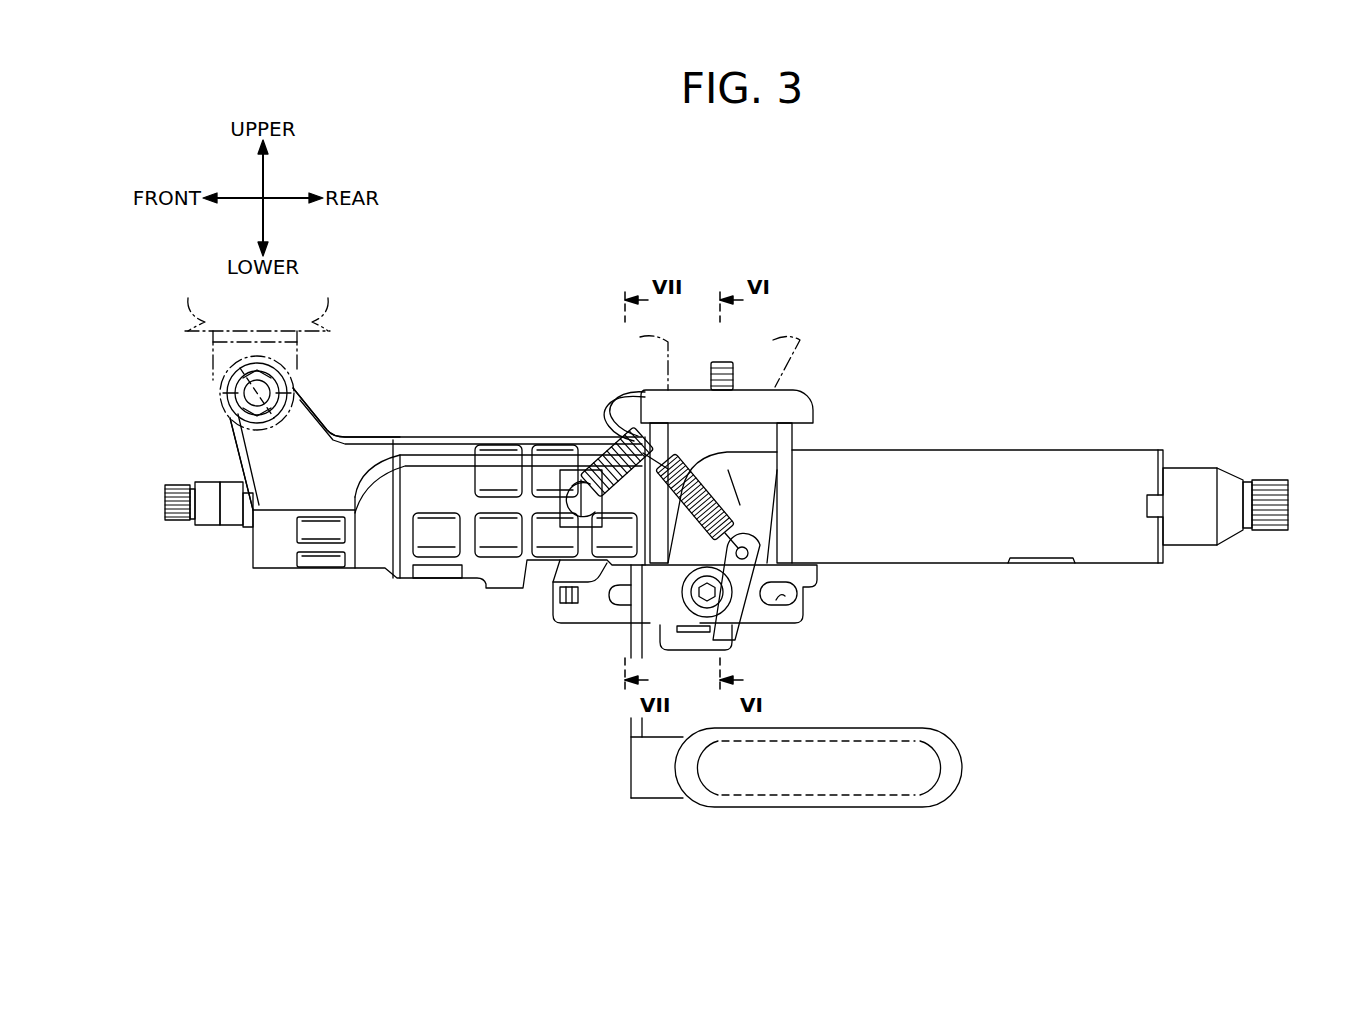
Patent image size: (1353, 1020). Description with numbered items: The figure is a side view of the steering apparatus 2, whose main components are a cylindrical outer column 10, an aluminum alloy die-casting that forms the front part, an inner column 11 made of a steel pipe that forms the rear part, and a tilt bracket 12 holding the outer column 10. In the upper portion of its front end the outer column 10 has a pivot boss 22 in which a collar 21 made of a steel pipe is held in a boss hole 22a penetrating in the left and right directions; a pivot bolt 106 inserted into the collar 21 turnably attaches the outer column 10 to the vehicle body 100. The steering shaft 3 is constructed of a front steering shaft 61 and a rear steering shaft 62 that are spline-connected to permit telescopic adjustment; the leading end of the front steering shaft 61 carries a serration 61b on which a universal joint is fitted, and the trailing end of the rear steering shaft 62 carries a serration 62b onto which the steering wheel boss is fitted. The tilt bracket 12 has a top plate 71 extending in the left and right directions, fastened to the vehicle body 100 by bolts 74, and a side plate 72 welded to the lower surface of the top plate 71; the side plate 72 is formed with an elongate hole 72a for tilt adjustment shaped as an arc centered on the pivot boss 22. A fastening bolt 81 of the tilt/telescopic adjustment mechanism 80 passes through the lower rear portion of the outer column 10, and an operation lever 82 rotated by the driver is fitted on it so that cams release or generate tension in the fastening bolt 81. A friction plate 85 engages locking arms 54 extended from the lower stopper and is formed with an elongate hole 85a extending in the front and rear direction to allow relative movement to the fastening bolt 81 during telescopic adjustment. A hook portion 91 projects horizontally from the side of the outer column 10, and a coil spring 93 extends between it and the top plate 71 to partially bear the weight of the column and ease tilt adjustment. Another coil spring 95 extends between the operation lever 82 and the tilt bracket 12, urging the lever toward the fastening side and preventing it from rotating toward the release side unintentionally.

The steering apparatus 2 is at (977, 465).
The steering shaft 3 is at (1233, 502).
The outer column 10 is at (443, 582).
The inner column 11 is at (941, 570).
The tilt bracket 12 is at (765, 443).
The collar 21 is at (226, 393).
The pivot boss 22 is at (302, 430).
The boss hole 22a is at (232, 420).
The locking arm 54 is at (568, 603).
The front steering shaft 61 is at (208, 540).
The serration 61b is at (181, 513).
The rear steering shaft 62 is at (1192, 552).
The serration 62b is at (1268, 490).
The top plate 71 is at (802, 410).
The left side plate 72 is at (755, 508).
The elongate hole for tilt adjustment 72a is at (693, 632).
The bolt 74 is at (730, 362).
The tilt/telescopic adjustment mechanism 80 is at (778, 670).
The fastening bolt 81 is at (718, 600).
The operation lever 82 is at (903, 728).
The friction plate 85 is at (797, 588).
The elongate hole 85a is at (781, 600).
The hook portion 91 is at (566, 492).
The coil spring 93 is at (602, 440).
The coil spring 95 is at (705, 497).
The vehicle body 100 is at (215, 337).
The pivot bolt 106 is at (298, 370).